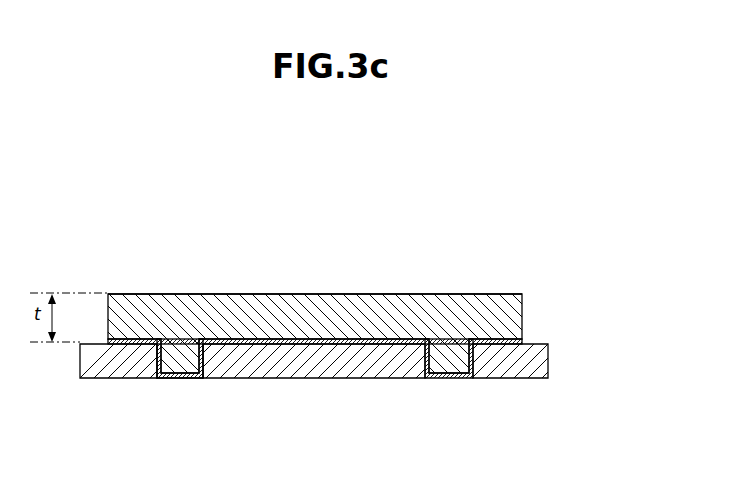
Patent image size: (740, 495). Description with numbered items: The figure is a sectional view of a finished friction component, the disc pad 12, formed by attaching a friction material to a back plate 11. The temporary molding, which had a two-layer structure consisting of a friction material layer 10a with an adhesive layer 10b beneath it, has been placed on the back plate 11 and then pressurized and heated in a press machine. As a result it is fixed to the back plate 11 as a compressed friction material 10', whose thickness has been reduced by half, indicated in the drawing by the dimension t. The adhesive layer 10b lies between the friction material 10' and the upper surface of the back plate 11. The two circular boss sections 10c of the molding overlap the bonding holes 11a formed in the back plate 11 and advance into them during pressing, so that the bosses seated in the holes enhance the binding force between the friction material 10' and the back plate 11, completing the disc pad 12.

The friction material 10' is at (314, 283).
The friction material layer 10a is at (523, 299).
The adhesive layer 10b is at (524, 326).
The boss sections 10c is at (453, 378).
The back plate 11 is at (330, 378).
The bonding holes 11a is at (200, 360).
The disc pad 12 is at (407, 216).